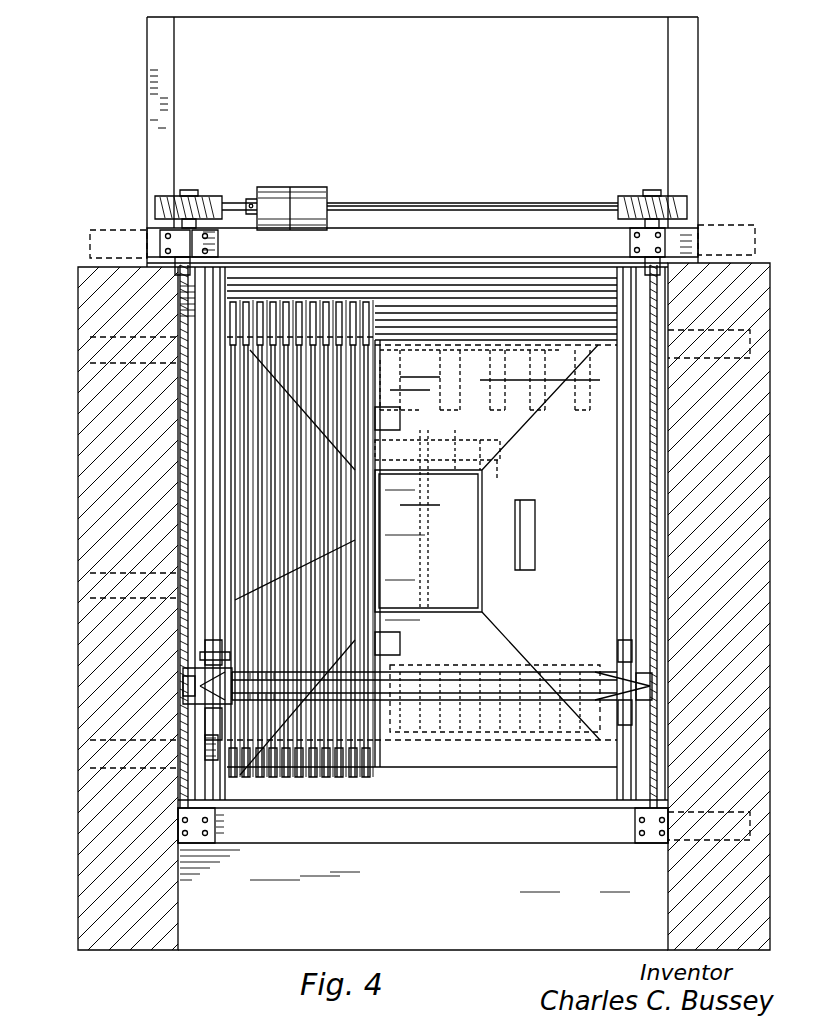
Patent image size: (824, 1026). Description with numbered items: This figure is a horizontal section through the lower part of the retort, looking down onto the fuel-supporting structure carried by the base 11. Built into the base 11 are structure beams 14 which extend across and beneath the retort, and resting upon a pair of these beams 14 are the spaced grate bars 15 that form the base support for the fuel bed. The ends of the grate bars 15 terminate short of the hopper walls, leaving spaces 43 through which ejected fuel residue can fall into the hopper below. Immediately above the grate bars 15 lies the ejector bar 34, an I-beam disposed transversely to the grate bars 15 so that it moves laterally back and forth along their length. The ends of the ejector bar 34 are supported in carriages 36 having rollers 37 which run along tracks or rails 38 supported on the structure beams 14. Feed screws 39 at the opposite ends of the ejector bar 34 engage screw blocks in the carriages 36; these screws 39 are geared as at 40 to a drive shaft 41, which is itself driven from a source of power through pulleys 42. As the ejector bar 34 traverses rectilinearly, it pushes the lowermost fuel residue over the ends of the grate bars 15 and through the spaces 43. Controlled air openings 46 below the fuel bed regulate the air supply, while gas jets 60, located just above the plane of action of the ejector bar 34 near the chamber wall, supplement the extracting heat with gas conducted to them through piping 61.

The base 11 is at (100, 570).
The beams 14 is at (604, 330).
The grate bars 15 is at (372, 767).
The ejector bar 34 is at (495, 678).
The carriages 36 is at (200, 688).
The rollers 37 is at (205, 650).
The tracks or rails 38 is at (205, 597).
The feed screws 39 is at (200, 268).
The gearing 40 is at (215, 196).
The drive shaft 41 is at (372, 195).
The pulleys 42 is at (296, 187).
The spaces 43 is at (490, 270).
The air openings 46 is at (400, 418).
The gas jets 60 is at (578, 408).
The piping 61 is at (418, 345).